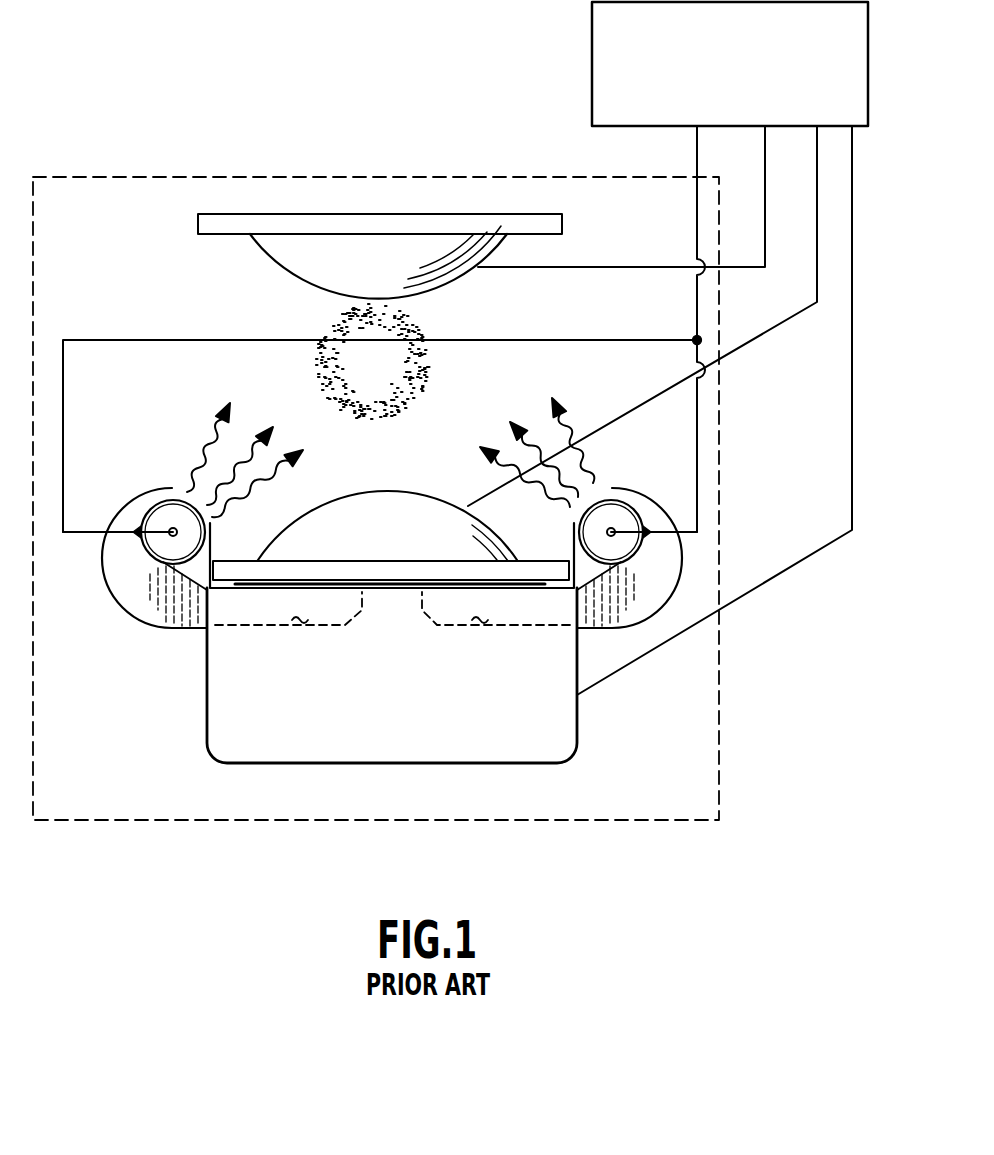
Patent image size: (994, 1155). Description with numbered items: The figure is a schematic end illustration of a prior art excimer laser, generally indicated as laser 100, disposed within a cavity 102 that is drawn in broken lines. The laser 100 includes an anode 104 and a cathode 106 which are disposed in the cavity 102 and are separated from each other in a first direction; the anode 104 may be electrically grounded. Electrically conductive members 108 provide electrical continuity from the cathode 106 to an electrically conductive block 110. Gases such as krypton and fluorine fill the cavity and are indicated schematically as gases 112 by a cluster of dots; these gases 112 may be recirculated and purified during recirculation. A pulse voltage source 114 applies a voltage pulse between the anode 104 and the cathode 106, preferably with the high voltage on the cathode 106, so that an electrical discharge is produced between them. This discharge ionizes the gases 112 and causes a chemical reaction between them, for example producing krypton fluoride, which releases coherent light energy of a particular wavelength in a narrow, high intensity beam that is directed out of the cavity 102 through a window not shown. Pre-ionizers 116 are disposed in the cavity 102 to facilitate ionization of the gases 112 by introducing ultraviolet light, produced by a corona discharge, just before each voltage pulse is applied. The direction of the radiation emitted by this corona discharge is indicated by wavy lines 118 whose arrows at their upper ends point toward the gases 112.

The laser 100 is at (160, 322).
The cavity 102 is at (720, 740).
The anode 104 is at (278, 262).
The cathode 106 is at (393, 490).
The electrically conductive members 108 is at (393, 592).
The electrically conductive block 110 is at (577, 725).
The gases 112 is at (373, 361).
The source 114 is at (592, 62).
The pre-ionizers 116 is at (158, 518).
The wavy lines 118 is at (203, 455).